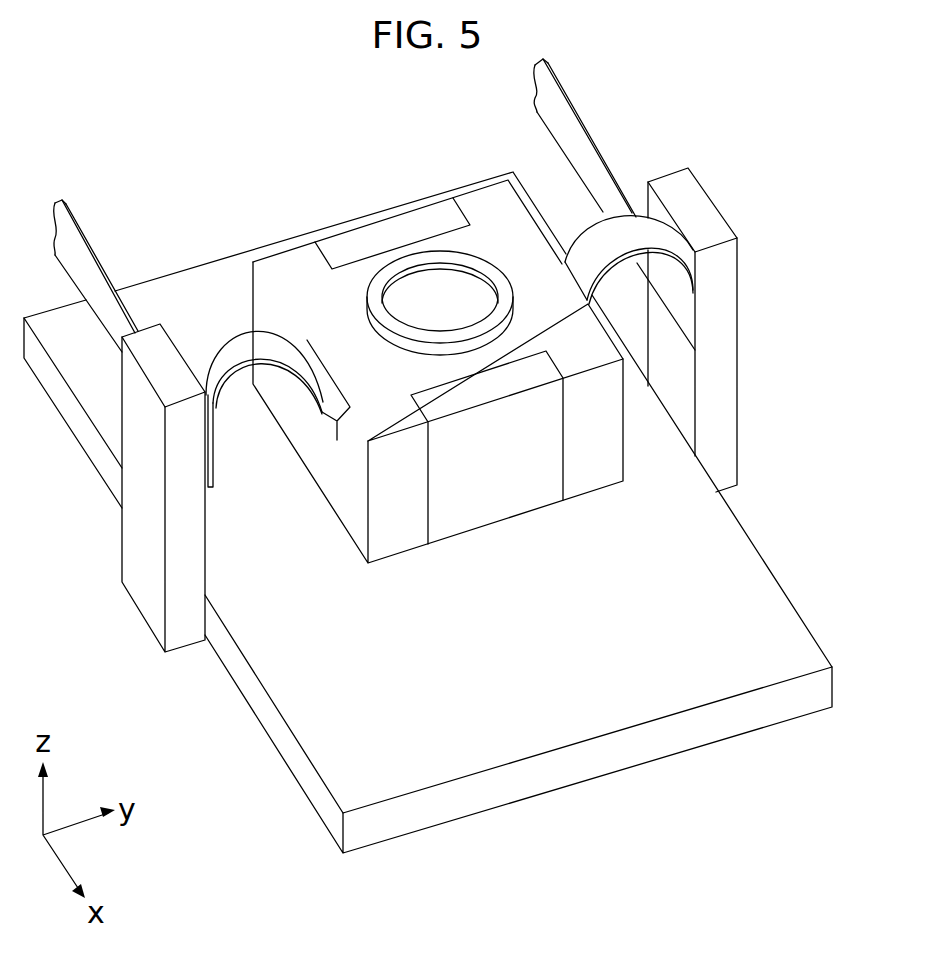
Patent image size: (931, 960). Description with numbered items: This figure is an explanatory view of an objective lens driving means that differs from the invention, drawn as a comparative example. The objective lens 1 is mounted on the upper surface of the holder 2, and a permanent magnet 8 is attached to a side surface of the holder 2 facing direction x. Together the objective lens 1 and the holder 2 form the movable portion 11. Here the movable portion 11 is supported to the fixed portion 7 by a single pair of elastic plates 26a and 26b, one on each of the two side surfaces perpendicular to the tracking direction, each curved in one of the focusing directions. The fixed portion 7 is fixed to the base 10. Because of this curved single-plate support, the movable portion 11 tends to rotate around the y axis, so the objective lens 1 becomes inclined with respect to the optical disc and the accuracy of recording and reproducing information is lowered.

The objective lens 1 is at (468, 291).
The holder 2 is at (492, 198).
The fixed portion 7 is at (724, 300).
The permanent magnet 8 is at (398, 229).
The base 10 is at (758, 584).
The movable portion 11 is at (452, 150).
The elastic plate 26a is at (234, 348).
The elastic plate 26b is at (620, 229).